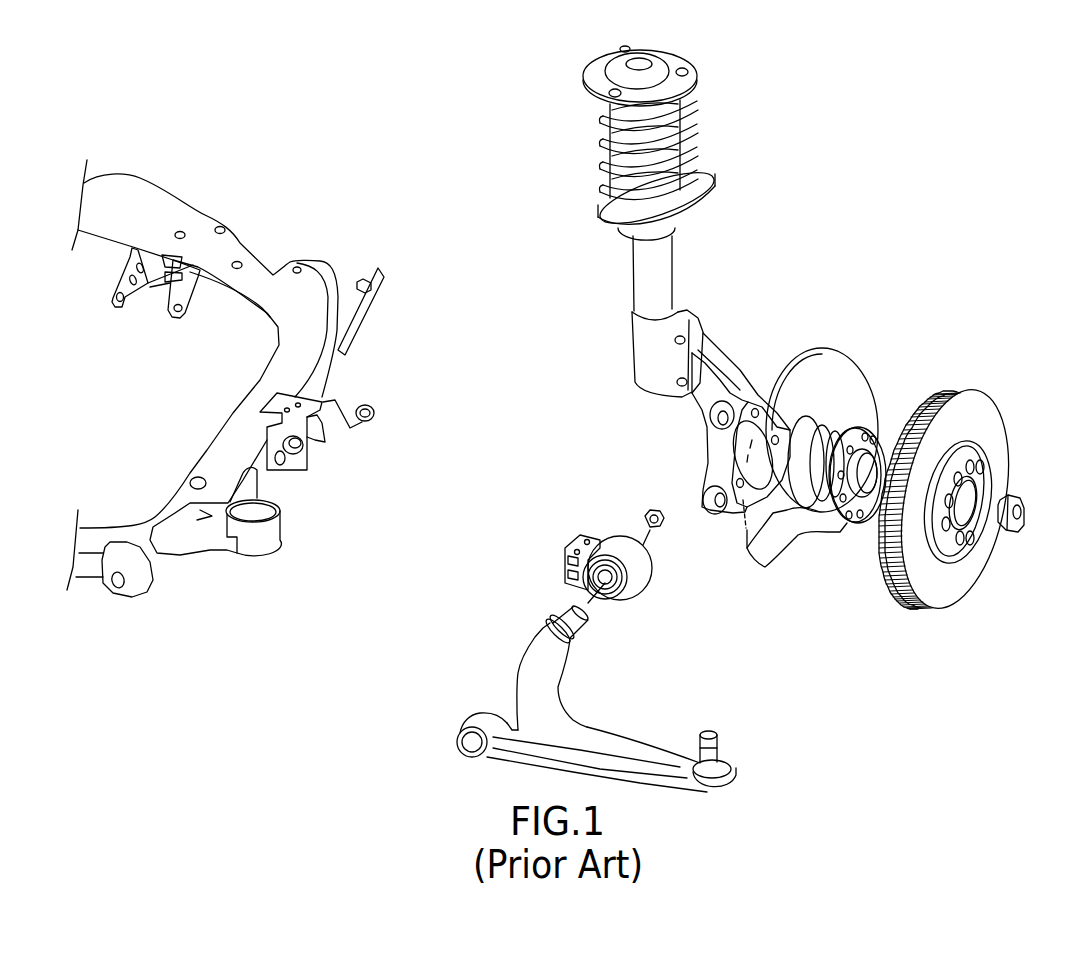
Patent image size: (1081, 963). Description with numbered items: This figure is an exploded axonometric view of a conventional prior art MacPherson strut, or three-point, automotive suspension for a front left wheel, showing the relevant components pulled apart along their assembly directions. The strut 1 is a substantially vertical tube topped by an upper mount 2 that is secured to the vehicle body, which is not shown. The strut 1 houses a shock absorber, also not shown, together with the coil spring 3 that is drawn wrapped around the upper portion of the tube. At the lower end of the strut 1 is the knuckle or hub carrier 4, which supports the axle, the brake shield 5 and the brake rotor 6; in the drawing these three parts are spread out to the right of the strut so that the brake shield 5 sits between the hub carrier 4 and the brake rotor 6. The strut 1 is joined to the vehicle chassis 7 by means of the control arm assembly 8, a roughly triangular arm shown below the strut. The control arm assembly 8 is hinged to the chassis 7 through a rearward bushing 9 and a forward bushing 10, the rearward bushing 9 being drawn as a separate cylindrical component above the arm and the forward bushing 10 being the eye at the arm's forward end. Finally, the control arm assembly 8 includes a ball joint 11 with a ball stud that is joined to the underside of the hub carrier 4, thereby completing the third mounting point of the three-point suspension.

The strut 1 is at (673, 277).
The upper mount 2 is at (667, 71).
The coil spring 3 is at (703, 133).
The knuckle or hub carrier 4 is at (747, 378).
The brake shield 5 is at (858, 370).
The brake rotor 6 is at (979, 393).
The vehicle chassis 7 is at (240, 230).
The control arm assembly 8 is at (590, 730).
The rearward bushing 9 is at (615, 535).
The forward bushing 10 is at (347, 443).
The ball joint 11 is at (734, 744).